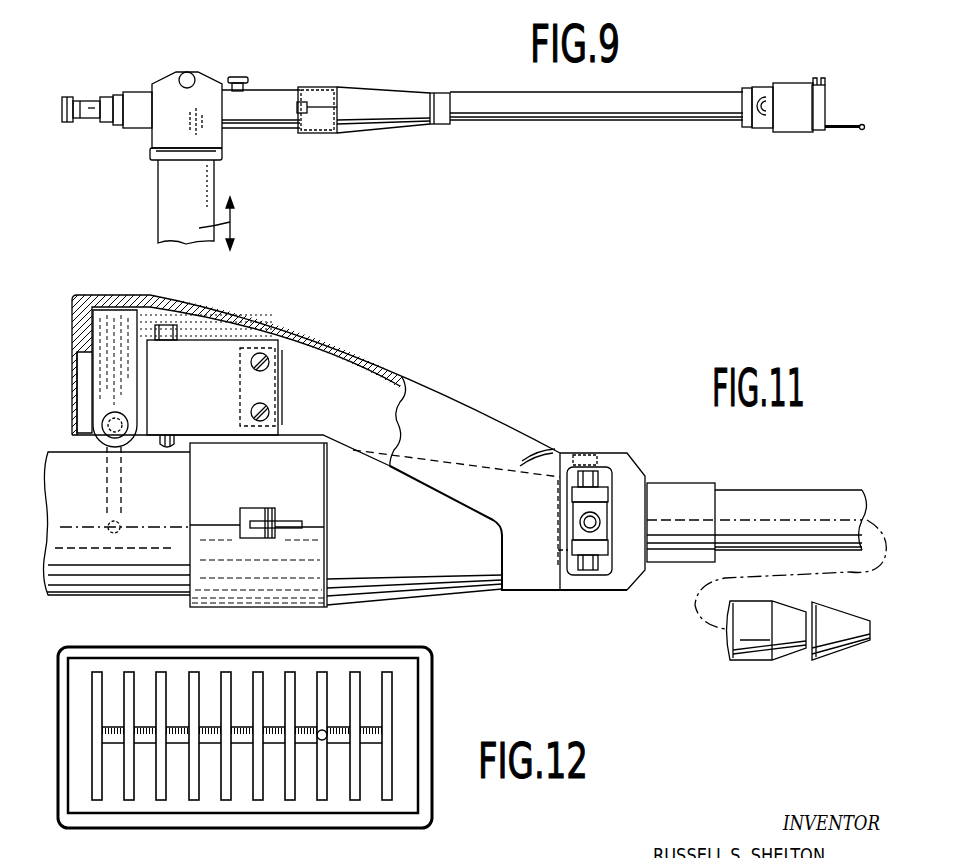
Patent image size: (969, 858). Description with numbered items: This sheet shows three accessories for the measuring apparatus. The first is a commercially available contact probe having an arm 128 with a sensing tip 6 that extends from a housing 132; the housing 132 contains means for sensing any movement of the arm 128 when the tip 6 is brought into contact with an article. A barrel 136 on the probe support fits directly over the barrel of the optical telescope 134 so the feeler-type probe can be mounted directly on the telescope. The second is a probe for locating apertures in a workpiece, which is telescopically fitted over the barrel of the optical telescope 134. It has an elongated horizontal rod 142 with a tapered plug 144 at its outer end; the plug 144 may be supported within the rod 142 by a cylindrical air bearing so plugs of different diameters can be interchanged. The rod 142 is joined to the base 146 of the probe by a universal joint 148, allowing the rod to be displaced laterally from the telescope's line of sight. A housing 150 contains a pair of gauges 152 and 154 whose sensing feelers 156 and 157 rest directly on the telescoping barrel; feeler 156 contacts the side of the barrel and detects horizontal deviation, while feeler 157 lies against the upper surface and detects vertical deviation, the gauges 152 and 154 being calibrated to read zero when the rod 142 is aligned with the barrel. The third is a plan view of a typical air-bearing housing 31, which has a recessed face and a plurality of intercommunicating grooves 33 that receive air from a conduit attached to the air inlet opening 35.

In FIG. 9, the sensing tip 6 is at (863, 130).
In FIG. 9, the arm 128 is at (843, 121).
In FIG. 9, the housing 132 is at (795, 100).
In FIG. 9, the optical telescope 134 is at (280, 100).
In FIG. 9, the barrel 136 is at (363, 95).
In FIG. 11, the elongated horizontal rod 142 is at (832, 503).
In FIG. 11, the tapered plug 144 is at (858, 649).
In FIG. 11, the base 146 is at (460, 563).
In FIG. 11, the universal joint 148 is at (598, 492).
In FIG. 11, the housing 150 is at (515, 433).
In FIG. 11, the gauge 152 is at (125, 392).
In FIG. 11, the gauge 154 is at (225, 392).
In FIG. 11, the sensing feeler 156 is at (107, 483).
In FIG. 11, the sensing feeler 157 is at (163, 452).
In FIG. 12, the housing 31 is at (432, 711).
In FIG. 12, the intercommunicating grooves 33 is at (360, 682).
In FIG. 12, the air inlet opening 35 is at (325, 740).